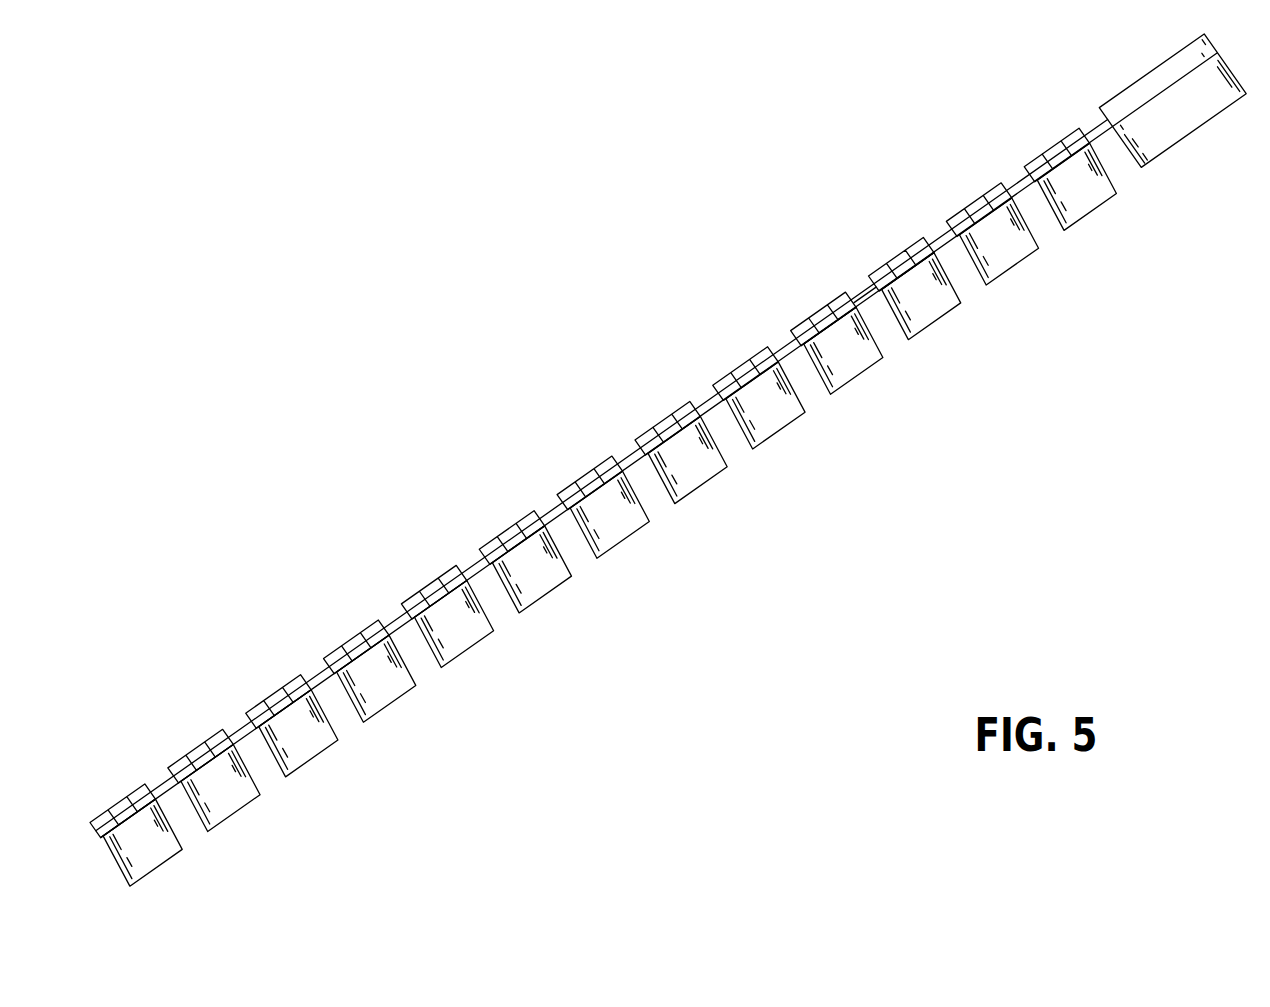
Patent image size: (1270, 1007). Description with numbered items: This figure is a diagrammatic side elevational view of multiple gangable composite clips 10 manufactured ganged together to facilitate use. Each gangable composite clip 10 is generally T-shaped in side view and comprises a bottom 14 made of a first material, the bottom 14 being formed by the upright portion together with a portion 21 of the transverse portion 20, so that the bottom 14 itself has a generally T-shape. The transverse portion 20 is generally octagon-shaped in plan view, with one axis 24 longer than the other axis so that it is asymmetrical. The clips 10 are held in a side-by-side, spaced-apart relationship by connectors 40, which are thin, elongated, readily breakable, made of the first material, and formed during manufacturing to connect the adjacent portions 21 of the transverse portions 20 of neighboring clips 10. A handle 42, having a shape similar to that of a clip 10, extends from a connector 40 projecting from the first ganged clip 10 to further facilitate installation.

The gangable composite clip 10 is at (795, 284).
The bottom 14 is at (875, 371).
The transverse portion 20 is at (790, 324).
The portion of the transverse portion 21 is at (832, 323).
The axis 24 is at (940, 272).
The connector 40 is at (1092, 127).
The handle 42 is at (1145, 79).